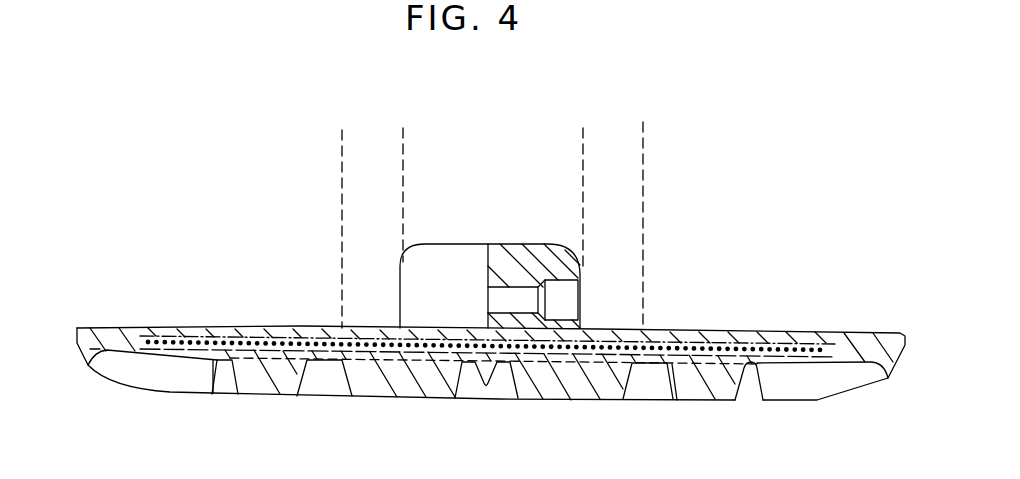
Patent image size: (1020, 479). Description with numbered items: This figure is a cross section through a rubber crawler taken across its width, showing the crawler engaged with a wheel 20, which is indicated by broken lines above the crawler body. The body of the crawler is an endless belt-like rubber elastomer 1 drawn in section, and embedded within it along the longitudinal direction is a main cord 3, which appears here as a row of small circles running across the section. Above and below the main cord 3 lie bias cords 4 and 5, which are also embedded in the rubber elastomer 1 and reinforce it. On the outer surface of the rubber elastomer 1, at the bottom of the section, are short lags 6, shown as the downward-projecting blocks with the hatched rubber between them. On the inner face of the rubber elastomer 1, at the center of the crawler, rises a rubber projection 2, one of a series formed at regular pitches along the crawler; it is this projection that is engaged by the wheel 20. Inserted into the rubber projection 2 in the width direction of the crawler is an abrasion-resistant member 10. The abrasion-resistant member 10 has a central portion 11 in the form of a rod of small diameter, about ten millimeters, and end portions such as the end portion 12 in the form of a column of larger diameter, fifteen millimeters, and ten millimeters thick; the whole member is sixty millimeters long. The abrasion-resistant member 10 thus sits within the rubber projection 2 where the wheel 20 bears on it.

The rubber elastomer 1 is at (840, 340).
The rubber projection 2 is at (413, 284).
The main cord 3 is at (148, 341).
The bias cord 4 is at (195, 337).
The bias cord 5 is at (170, 350).
The short lag 6 is at (388, 384).
The abrasion-resistant member 10 is at (595, 286).
The central portion 11 is at (500, 296).
The end portion 12 is at (570, 305).
The wheel 20 is at (645, 130).